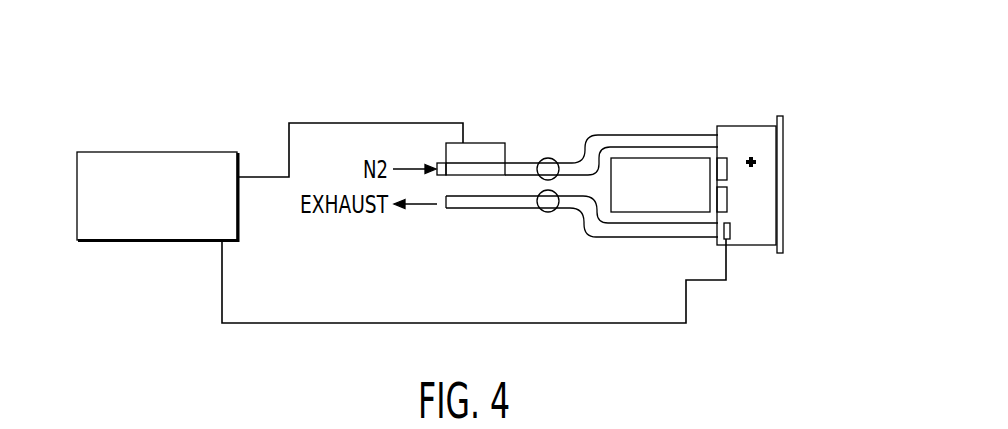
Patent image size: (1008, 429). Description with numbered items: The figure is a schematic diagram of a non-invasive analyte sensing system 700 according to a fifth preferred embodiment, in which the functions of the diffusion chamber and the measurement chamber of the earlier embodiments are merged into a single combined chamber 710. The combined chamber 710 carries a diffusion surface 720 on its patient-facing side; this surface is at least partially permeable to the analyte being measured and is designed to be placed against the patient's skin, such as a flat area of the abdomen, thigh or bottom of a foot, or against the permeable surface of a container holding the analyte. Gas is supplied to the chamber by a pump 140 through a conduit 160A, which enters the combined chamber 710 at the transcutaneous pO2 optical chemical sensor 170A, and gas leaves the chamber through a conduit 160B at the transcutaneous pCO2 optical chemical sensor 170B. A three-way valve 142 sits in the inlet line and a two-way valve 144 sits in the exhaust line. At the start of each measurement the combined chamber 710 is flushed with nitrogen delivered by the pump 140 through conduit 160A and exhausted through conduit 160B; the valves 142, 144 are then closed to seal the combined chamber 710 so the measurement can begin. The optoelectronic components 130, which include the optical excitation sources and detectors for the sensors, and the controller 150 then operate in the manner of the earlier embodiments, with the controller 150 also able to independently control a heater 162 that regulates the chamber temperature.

The non-invasive analyte sensing system 700 is at (410, 45).
The controller 150 is at (165, 152).
The pump 140 is at (490, 143).
The three-way valve 142 is at (549, 158).
The two-way valve 144 is at (547, 212).
The conduit 160A is at (523, 163).
The conduit 160B is at (628, 237).
The optoelectronic components 130 is at (642, 168).
The transcutaneous pO2 optical chemical sensor 170A is at (727, 168).
The transcutaneous pCO2 optical chemical sensor 170B is at (728, 199).
The combined chamber 710 is at (751, 155).
The diffusion surface 720 is at (781, 140).
The heater 162 is at (729, 229).